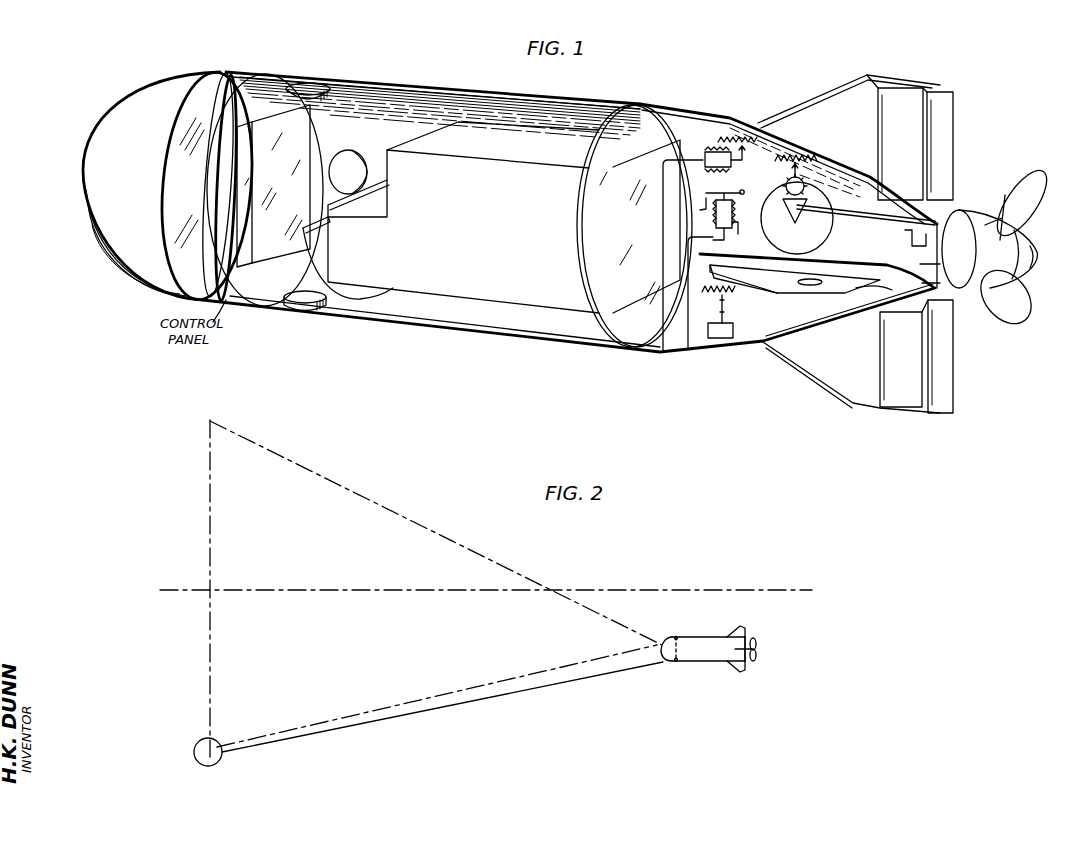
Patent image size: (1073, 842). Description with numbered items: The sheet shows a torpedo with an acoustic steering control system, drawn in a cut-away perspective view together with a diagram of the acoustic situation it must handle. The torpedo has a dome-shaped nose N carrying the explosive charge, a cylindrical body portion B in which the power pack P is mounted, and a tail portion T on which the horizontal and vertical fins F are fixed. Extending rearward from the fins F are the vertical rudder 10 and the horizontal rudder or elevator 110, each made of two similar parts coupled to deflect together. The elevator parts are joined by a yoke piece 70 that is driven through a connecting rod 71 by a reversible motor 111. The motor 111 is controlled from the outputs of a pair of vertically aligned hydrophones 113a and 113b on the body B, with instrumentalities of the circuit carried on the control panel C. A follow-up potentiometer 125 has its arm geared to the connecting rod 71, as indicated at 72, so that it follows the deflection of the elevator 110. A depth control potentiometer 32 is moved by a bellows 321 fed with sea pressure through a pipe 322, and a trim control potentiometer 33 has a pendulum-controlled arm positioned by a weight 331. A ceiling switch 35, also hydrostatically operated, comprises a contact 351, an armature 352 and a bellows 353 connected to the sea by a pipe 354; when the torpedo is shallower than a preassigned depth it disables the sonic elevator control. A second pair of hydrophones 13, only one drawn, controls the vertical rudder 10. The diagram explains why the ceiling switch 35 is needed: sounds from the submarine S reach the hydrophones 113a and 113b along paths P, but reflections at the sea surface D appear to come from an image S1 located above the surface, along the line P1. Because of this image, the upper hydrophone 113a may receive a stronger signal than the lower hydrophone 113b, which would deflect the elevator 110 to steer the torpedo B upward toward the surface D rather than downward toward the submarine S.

In FIG. 1, the nose N is at (128, 104).
In FIG. 1, the control panel C is at (305, 141).
In FIG. 1, the second pair of hydrophones 13 is at (347, 161).
In FIG. 1, the upper hydrophone 113a is at (308, 85).
In FIG. 2, the upper hydrophone 113a is at (677, 634).
In FIG. 1, the lower hydrophone 113b is at (304, 309).
In FIG. 2, the lower hydrophone 113b is at (677, 664).
In FIG. 1, the body portion B is at (438, 336).
In FIG. 2, the body portion B is at (734, 662).
In FIG. 1, the power pack P is at (528, 298).
In FIG. 2, the power pack P is at (487, 695).
In FIG. 1, the bellows 321 is at (708, 148).
In FIG. 1, the depth control potentiometer 32 is at (735, 135).
In FIG. 1, the pipe 322 is at (662, 310).
In FIG. 1, the contact 351 is at (695, 201).
In FIG. 1, the armature 352 is at (729, 196).
In FIG. 1, the bellows 353 is at (748, 239).
In FIG. 1, the pipe 354 is at (688, 280).
In FIG. 1, the ceiling switch 35 is at (741, 214).
In FIG. 1, the gearing 72 is at (806, 184).
In FIG. 1, the follow-up potentiometer 125 is at (798, 157).
In FIG. 1, the motor 111 is at (825, 230).
In FIG. 1, the connecting rod 71 is at (898, 230).
In FIG. 1, the yoke piece 70 is at (918, 246).
In FIG. 1, the trim control potentiometer 33 is at (733, 312).
In FIG. 1, the weight 331 is at (733, 330).
In FIG. 1, the tail portion T is at (727, 350).
In FIG. 1, the horizontal rudder or elevator 110 is at (871, 287).
In FIG. 1, the fins F is at (852, 103).
In FIG. 1, the vertical rudder 10 is at (950, 140).
In FIG. 2, the path line P1 is at (469, 548).
In FIG. 2, the sea surface D is at (417, 590).
In FIG. 2, the image of the submarine S1 is at (230, 419).
In FIG. 2, the submarine S is at (217, 755).